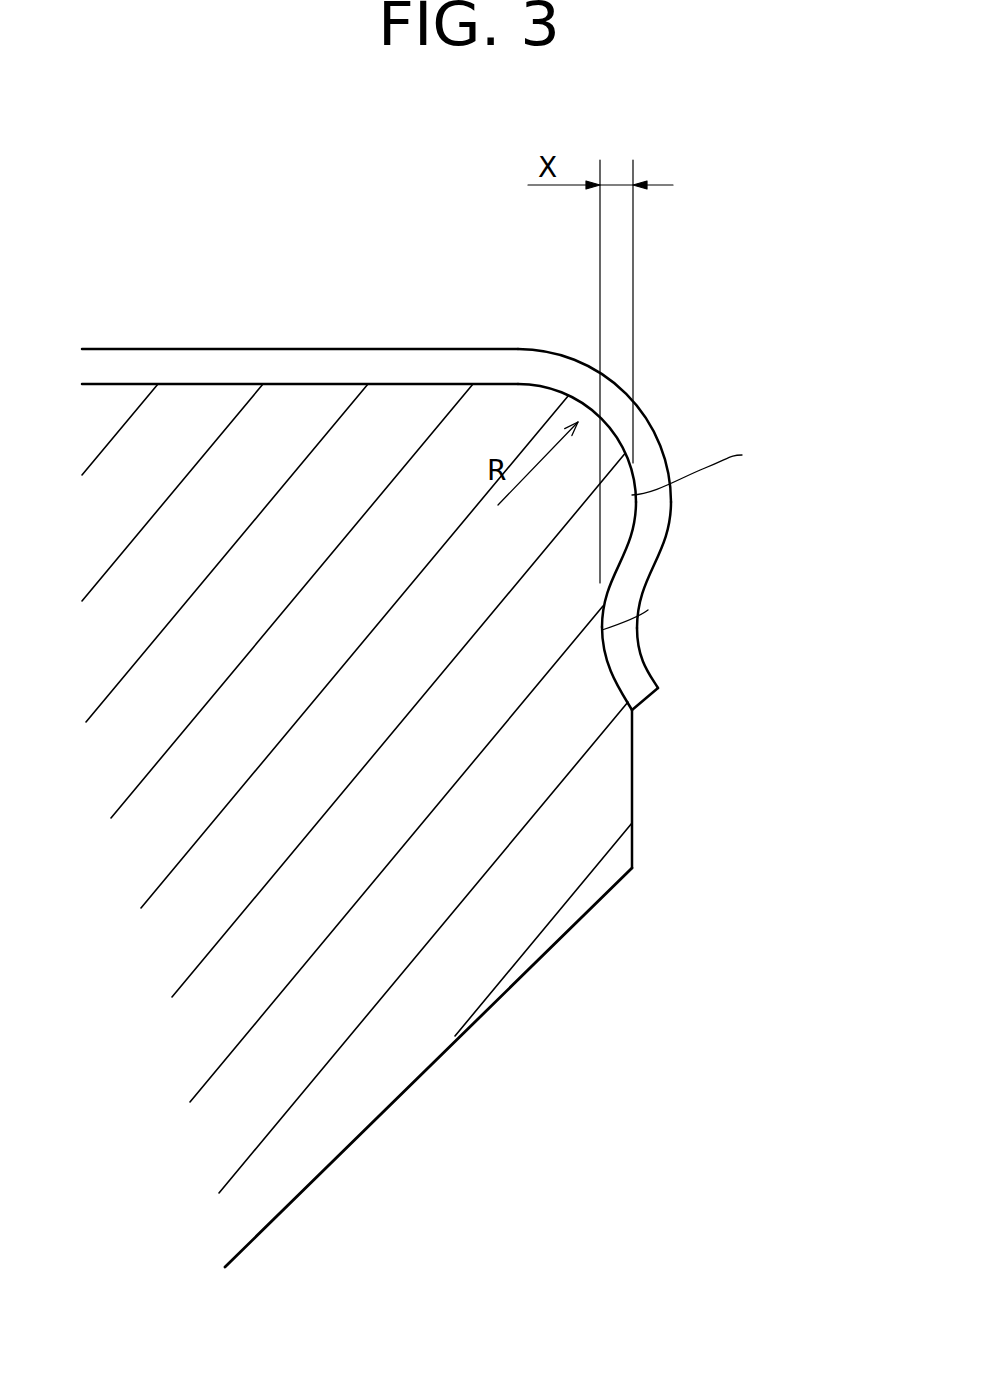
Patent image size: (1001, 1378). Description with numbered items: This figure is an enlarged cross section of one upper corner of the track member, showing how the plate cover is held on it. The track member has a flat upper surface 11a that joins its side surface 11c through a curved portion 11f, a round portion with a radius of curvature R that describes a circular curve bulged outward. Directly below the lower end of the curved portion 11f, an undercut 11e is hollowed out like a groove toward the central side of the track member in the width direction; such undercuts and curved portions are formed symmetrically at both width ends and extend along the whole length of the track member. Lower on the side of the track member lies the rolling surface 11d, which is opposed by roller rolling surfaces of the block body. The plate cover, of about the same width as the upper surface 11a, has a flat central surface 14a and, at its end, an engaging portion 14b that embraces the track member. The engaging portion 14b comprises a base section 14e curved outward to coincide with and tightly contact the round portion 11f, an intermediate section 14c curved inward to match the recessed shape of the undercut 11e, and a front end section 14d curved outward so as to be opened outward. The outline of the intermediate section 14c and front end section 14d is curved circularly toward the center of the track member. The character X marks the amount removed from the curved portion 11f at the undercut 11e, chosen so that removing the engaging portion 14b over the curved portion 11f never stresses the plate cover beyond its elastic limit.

The upper surface 11a is at (195, 383).
The flat central surface 14a is at (410, 360).
The base section 14e is at (648, 450).
The curved portion 11f is at (704, 465).
The engaging portion 14b is at (688, 532).
The undercut 11e is at (648, 610).
The intermediate section 14c is at (628, 642).
The front end section 14d is at (645, 705).
The side surface 11c is at (633, 838).
The rolling surface 11d is at (430, 1066).